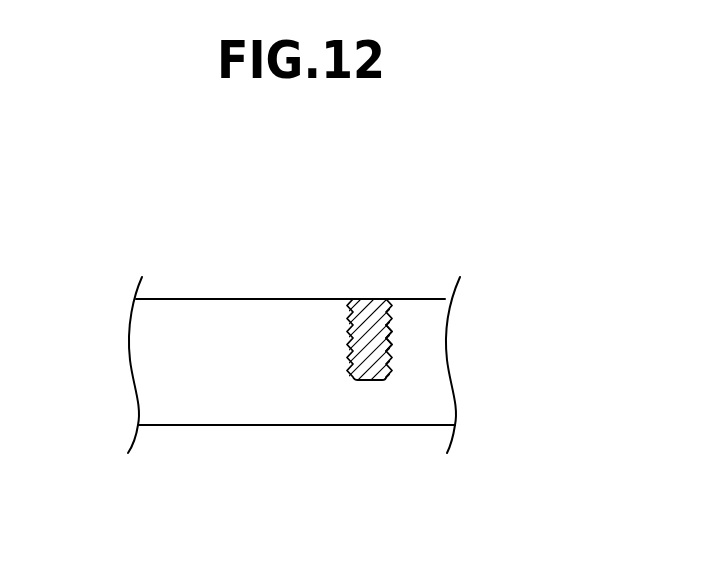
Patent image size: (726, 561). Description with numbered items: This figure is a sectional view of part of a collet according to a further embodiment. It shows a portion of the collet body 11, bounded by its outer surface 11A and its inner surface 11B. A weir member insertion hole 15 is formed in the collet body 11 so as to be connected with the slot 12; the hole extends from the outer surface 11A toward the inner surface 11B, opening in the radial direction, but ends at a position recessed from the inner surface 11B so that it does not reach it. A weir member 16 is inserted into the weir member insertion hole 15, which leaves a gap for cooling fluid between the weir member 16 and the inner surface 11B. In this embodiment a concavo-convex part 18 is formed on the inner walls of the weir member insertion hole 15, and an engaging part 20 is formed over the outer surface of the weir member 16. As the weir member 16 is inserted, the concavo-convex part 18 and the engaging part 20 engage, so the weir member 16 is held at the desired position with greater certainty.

The collet body 11 is at (183, 299).
The outer surface 11A is at (260, 299).
The inner surface 11B is at (262, 425).
The slot 12 is at (155, 370).
The weir member insertion hole 15 is at (390, 322).
The weir member 16 is at (367, 314).
The concavo-convex part 18 is at (392, 341).
The engaging part 20 is at (386, 378).